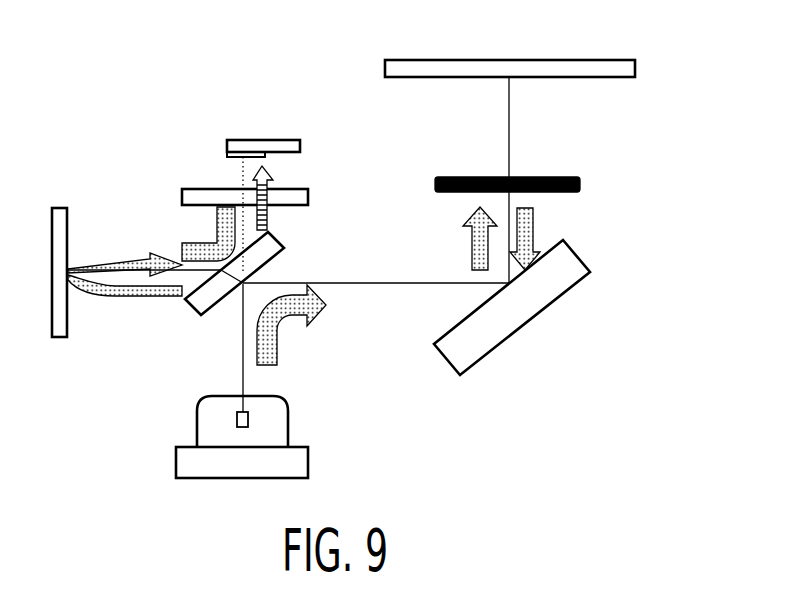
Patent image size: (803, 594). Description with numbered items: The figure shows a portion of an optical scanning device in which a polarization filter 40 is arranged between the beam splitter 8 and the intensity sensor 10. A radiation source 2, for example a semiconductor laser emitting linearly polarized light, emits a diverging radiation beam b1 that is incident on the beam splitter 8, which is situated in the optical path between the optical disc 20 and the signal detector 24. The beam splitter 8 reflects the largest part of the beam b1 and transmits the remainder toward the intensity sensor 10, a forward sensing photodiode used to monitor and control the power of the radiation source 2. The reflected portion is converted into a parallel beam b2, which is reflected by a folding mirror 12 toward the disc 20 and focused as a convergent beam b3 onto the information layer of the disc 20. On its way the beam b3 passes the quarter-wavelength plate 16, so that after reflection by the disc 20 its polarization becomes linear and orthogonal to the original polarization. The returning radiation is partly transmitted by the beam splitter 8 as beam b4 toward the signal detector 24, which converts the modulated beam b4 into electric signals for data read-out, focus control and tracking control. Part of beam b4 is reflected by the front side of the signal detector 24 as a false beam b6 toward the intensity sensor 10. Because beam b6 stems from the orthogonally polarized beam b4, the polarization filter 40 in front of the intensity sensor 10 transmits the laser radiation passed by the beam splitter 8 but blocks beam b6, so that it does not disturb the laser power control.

The radiation source 2 is at (288, 430).
The beam splitter 8 is at (272, 244).
The intensity sensor 10 is at (280, 140).
The folding mirror 12 is at (577, 266).
The quarter-wavelength plate 16 is at (581, 184).
The optical disc 20 is at (636, 68).
The signal detector 24 is at (71, 265).
The polarization filter 40 is at (309, 198).
The radiation beam b1 is at (291, 327).
The parallel beam b2 is at (469, 238).
The convergent beam b3 is at (539, 232).
The reflected beam b4 is at (125, 291).
The false radiation beam b6 is at (216, 218).